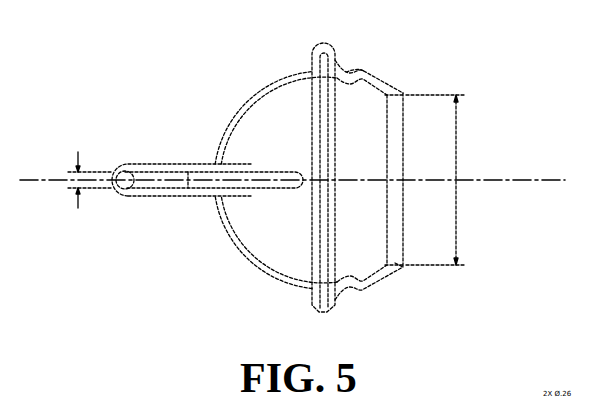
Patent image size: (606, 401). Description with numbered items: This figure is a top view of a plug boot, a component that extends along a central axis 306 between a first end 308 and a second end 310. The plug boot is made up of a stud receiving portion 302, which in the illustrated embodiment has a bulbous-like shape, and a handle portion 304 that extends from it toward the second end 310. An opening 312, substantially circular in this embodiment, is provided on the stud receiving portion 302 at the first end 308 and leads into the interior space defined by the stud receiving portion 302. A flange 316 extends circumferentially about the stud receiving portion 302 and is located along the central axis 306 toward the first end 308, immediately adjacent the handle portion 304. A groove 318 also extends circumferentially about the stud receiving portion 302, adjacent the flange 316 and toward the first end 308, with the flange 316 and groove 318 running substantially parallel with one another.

The stud receiving portion 302 is at (278, 81).
The handle portion 304 is at (188, 164).
The central axis 306 is at (311, 183).
The first end 308 is at (403, 247).
The second end 310 is at (111, 175).
The opening 312 is at (394, 122).
The flange 316 is at (321, 313).
The groove 318 is at (349, 72).